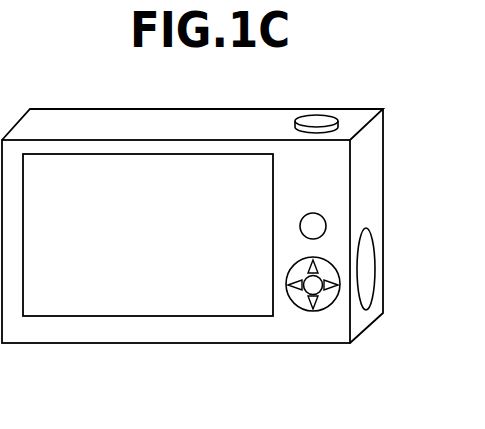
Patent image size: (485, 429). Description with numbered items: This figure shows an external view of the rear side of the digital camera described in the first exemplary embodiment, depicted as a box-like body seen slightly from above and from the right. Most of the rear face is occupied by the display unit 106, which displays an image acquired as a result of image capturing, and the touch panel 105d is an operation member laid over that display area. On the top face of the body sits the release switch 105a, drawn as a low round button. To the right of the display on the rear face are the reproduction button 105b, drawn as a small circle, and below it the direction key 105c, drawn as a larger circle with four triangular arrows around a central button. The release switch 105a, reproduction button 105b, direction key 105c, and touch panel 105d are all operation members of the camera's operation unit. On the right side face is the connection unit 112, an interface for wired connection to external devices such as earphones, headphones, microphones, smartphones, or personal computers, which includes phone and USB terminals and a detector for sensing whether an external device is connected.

The release switch 105a is at (321, 116).
The reproduction button 105b is at (313, 213).
The direction key 105c is at (298, 300).
The touch panel 105d is at (83, 167).
The display unit 106 is at (175, 153).
The connection unit 112 is at (366, 298).